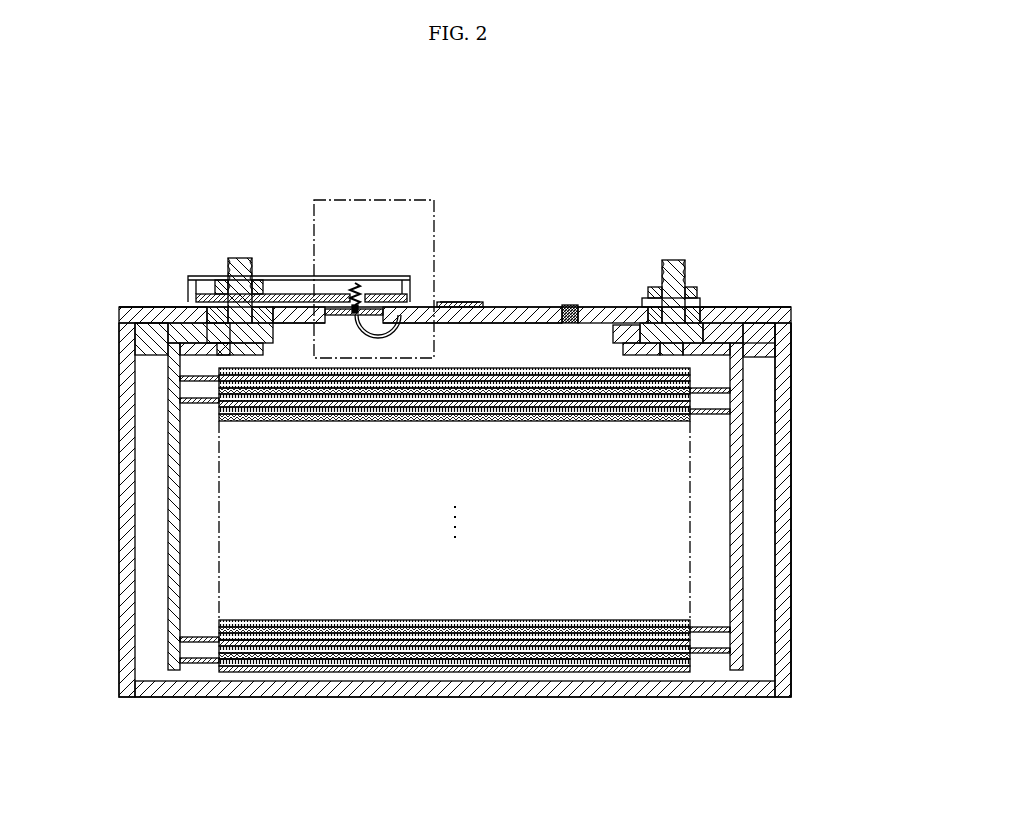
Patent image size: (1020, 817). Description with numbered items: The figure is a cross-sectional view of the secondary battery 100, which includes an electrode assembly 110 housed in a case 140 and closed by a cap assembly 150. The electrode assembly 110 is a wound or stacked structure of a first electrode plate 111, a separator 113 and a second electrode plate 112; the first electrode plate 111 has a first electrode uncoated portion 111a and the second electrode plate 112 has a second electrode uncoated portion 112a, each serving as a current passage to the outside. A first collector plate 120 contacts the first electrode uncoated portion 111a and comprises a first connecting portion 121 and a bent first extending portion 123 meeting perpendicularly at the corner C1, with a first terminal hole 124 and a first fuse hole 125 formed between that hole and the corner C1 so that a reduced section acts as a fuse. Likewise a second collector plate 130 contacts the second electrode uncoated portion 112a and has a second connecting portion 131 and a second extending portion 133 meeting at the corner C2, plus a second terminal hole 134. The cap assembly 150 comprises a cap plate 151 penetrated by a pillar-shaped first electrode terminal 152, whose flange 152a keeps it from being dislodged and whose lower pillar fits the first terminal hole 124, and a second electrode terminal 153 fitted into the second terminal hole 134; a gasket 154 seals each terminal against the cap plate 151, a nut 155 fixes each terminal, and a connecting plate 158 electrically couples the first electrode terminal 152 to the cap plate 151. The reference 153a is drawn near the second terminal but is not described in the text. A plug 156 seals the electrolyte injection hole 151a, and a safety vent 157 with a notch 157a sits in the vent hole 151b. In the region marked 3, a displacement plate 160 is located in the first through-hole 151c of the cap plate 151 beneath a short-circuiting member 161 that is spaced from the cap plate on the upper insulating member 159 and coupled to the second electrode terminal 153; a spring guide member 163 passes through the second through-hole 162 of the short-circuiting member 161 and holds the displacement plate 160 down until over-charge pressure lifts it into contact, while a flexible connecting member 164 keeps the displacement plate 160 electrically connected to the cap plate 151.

The secondary battery 100 is at (757, 182).
The electrode assembly 110 is at (453, 559).
The first electrode plate 111 is at (613, 673).
The first electrode uncoated portion 111a is at (708, 656).
The second electrode plate 112 is at (330, 673).
The second electrode uncoated portion 112a is at (198, 664).
The separator 113 is at (462, 650).
The first collector plate 120 is at (746, 458).
The first connecting portion 121 is at (712, 320).
The first extending portion 123 is at (738, 522).
The first terminal hole 124 is at (722, 367).
The first fuse hole 125 is at (732, 330).
The second collector plate 130 is at (457, 506).
The second connecting portion 131 is at (168, 306).
The second extending portion 133 is at (172, 540).
The second terminal hole 134 is at (188, 349).
The case 140 is at (786, 412).
The cap assembly 150 is at (531, 218).
The cap plate 151 is at (455, 309).
The electrolyte injection hole 151a is at (562, 326).
The vent hole 151b is at (478, 324).
The first through-hole 151c is at (381, 326).
The first electrode terminal 152 is at (672, 260).
The flange 152a is at (616, 343).
The second electrode terminal 153 is at (238, 258).
The terminal gasket 153a is at (188, 296).
The gasket 154 is at (212, 292).
The nut 155 is at (258, 290).
The plug 156 is at (570, 306).
The safety vent 157 is at (480, 304).
The notch 157a is at (458, 300).
The connecting plate 158 is at (699, 300).
The upper insulating member 159 is at (385, 259).
The displacement plate 160 is at (405, 302).
The short-circuiting member 161 is at (296, 294).
The second through-hole 162 is at (150, 336).
The guide member 163 is at (374, 300).
The connecting member 164 is at (356, 321).
The enlarged region 3 is at (434, 200).
The corner C1 is at (765, 323).
The corner C2 is at (140, 323).